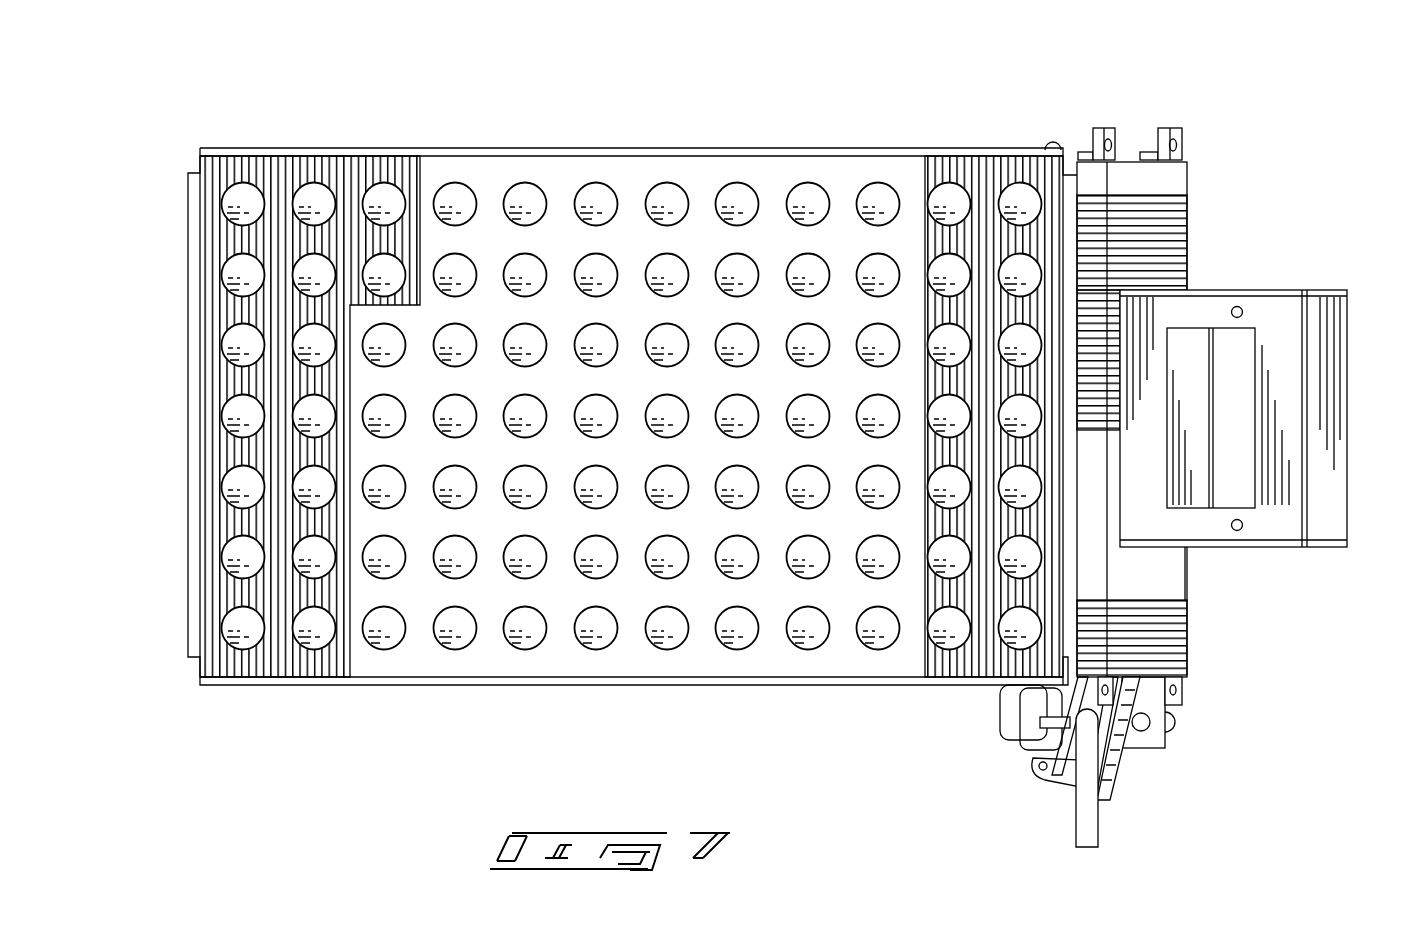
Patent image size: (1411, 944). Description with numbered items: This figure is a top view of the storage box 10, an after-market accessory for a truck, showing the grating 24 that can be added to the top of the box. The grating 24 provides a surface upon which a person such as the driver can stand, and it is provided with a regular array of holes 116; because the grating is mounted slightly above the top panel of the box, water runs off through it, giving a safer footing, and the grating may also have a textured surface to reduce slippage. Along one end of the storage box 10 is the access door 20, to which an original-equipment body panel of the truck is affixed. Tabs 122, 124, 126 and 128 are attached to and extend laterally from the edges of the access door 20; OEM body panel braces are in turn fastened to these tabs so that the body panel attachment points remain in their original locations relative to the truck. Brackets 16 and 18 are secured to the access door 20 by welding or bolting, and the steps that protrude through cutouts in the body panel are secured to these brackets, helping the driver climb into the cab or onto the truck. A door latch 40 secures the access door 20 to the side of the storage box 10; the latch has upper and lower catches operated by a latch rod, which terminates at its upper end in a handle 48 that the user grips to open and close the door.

The storage box 10 is at (168, 80).
The grating 24 is at (632, 416).
The holes 116 is at (862, 185).
The access door 20 is at (1203, 222).
The bracket 16 is at (1264, 445).
The bracket 18 is at (1203, 527).
The tab 124 is at (1107, 127).
The tab 128 is at (1186, 142).
The tab 122 is at (1093, 693).
The tab 126 is at (1183, 697).
The door latch 40 is at (1127, 788).
The handle 48 is at (1062, 812).